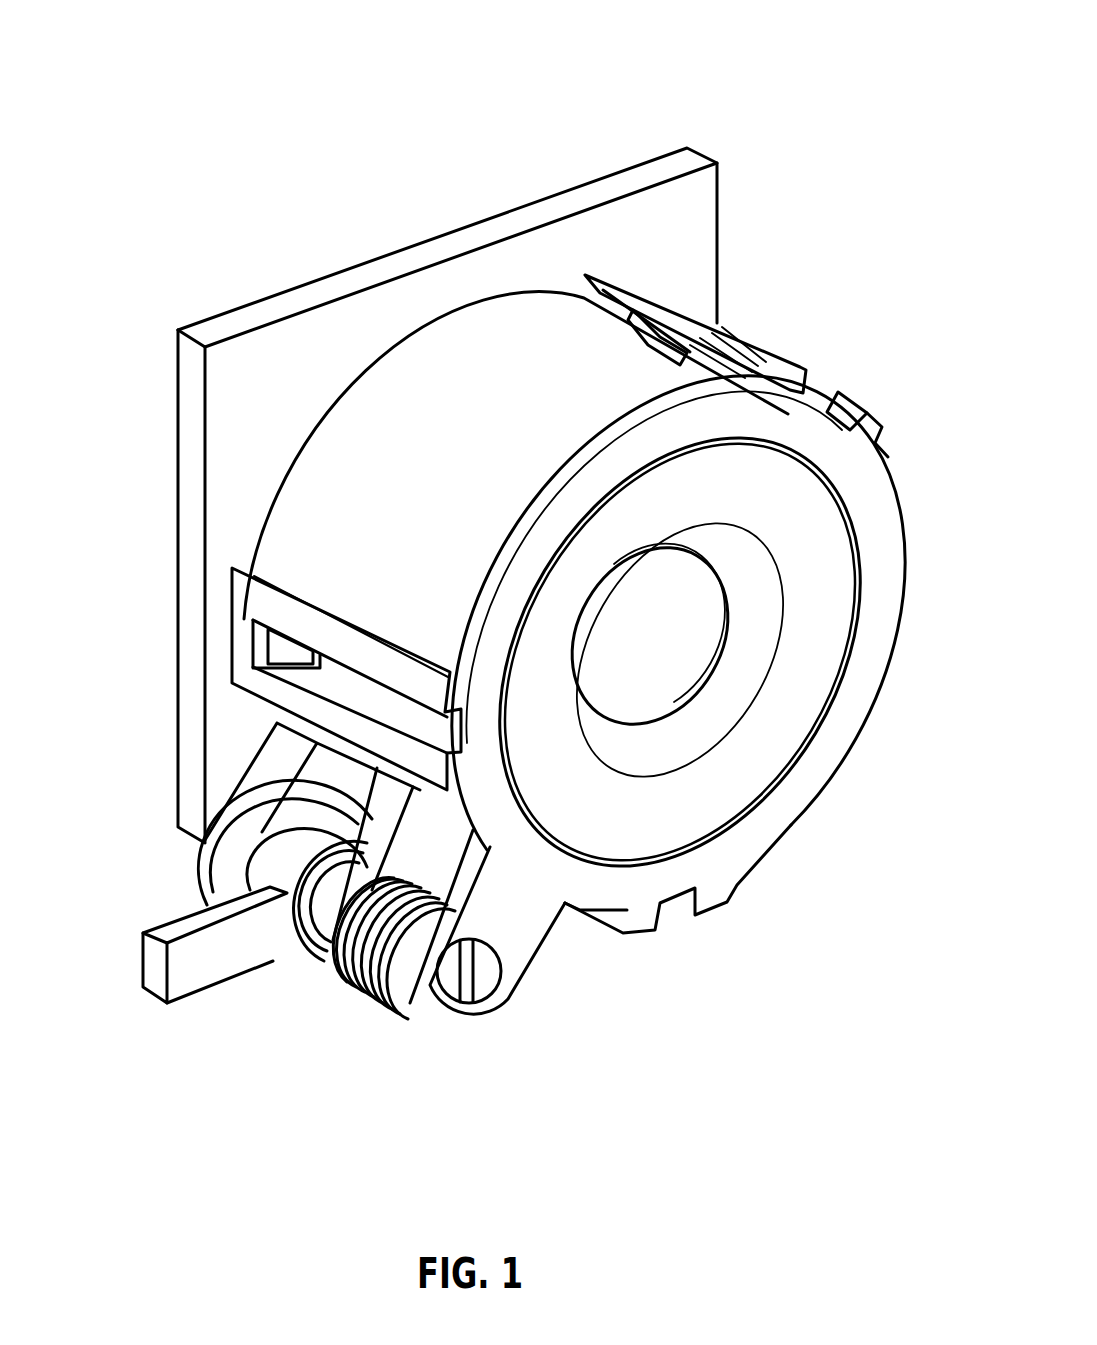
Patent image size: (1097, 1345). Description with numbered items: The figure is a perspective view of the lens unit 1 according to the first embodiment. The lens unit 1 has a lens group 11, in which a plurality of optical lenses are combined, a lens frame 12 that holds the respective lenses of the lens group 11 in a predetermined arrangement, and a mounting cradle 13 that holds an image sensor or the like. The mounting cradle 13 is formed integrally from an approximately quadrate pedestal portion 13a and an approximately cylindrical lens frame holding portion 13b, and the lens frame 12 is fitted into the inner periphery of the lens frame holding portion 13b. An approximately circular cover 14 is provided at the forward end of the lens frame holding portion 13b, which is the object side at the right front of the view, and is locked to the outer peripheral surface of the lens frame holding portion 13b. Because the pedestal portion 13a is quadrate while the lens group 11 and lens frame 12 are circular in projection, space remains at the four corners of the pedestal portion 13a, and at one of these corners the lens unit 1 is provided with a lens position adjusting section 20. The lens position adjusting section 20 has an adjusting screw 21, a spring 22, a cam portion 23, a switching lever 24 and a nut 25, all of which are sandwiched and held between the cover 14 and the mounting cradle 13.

The lens unit 1 is at (607, 106).
The lens group 11 is at (667, 630).
The lens frame 12 is at (764, 738).
The mounting cradle 13 is at (492, 544).
The pedestal portion 13a is at (268, 371).
The lens frame holding portion 13b is at (437, 360).
The cover 14 is at (764, 830).
The lens position adjusting section 20 is at (340, 1123).
The adjusting screw 21 is at (483, 980).
The spring 22 is at (363, 960).
The cam portion 23 is at (293, 960).
The switching lever 24 is at (200, 912).
The nut 25 is at (232, 875).